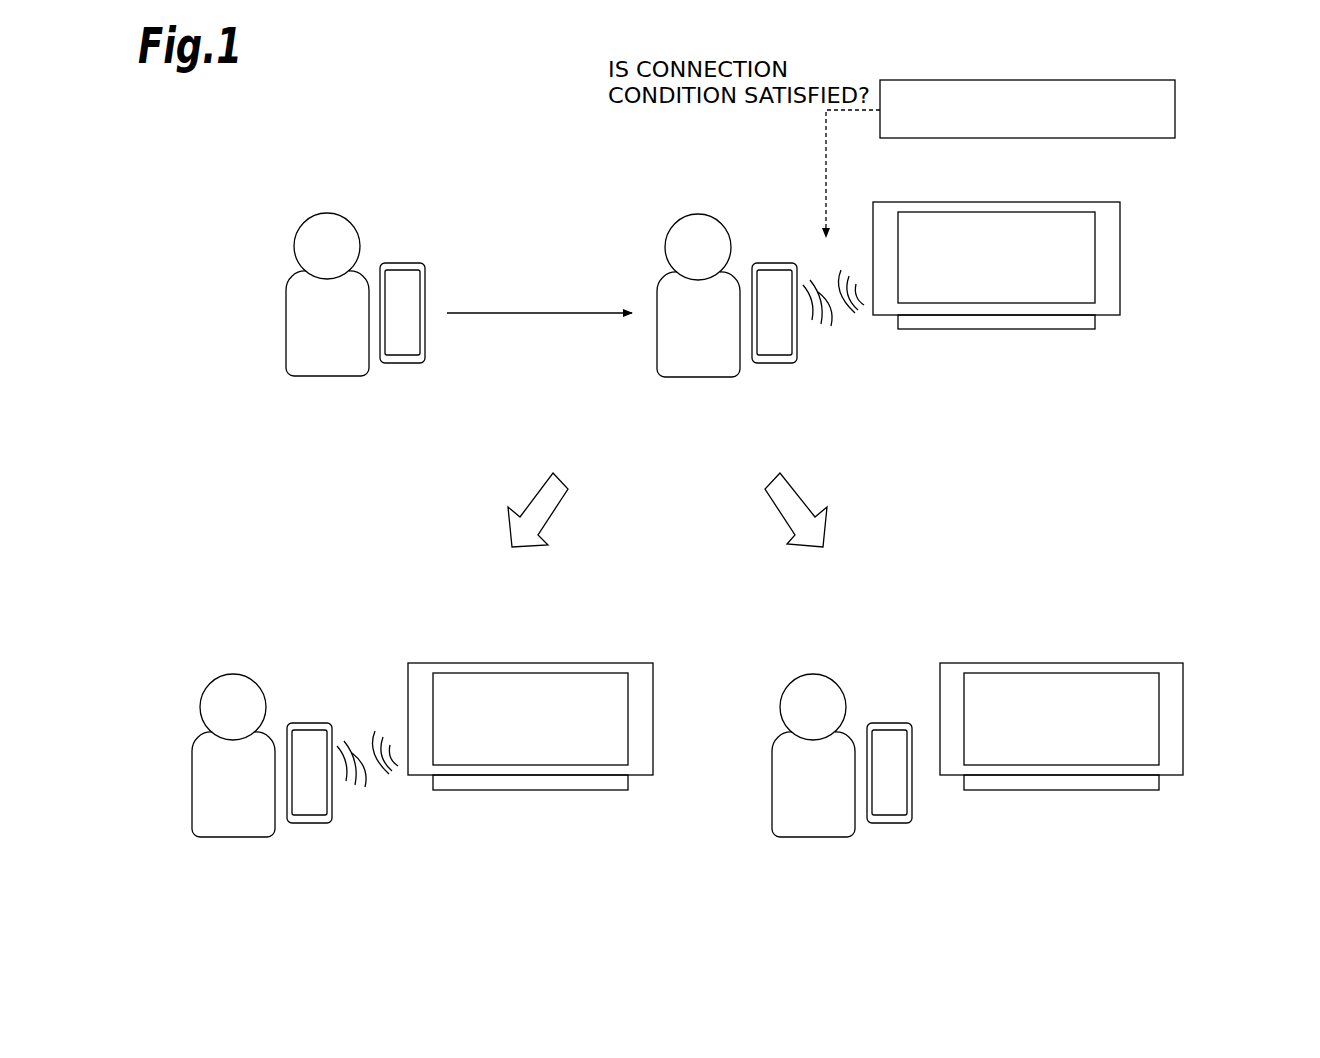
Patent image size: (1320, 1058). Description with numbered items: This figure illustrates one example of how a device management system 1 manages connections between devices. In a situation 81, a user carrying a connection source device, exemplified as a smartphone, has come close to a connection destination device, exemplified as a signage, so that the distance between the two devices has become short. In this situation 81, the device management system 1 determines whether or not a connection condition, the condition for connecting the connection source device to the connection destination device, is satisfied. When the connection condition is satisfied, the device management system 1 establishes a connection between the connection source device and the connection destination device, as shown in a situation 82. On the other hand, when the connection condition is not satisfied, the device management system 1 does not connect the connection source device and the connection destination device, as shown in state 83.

The device management system 1 is at (1075, 78).
The situation 81 is at (744, 264).
The situation 82 is at (464, 801).
The state 83 is at (1019, 801).